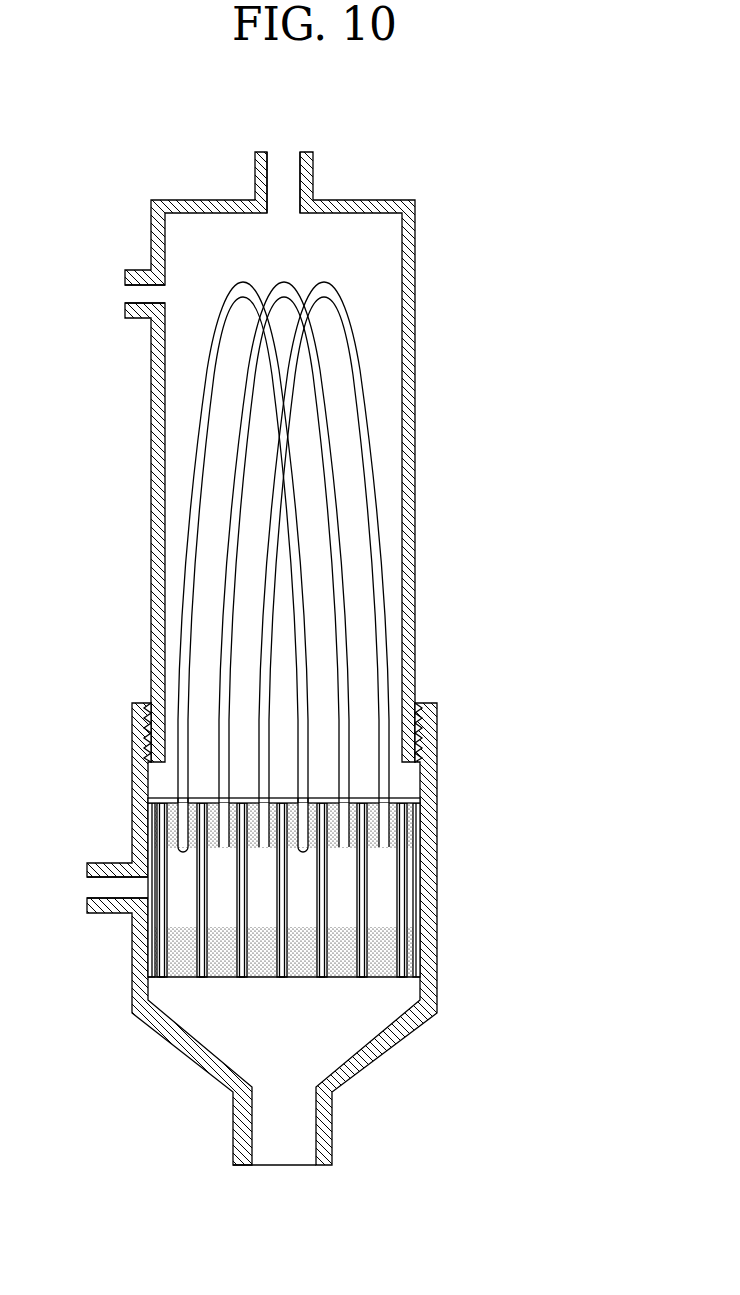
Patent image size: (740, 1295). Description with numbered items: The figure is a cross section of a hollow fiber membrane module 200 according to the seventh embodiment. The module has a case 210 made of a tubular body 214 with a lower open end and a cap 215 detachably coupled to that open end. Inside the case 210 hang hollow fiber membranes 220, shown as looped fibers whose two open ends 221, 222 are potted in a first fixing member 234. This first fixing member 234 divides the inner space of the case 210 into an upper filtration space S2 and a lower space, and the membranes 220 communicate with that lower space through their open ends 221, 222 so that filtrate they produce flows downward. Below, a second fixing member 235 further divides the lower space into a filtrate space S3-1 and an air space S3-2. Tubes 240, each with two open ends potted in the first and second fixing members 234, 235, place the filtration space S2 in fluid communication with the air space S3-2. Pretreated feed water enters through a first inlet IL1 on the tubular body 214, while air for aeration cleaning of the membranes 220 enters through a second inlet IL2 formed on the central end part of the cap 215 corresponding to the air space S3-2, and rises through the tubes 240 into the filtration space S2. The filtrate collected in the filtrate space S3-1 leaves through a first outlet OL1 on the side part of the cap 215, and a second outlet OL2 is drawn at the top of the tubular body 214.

The hollow fiber membrane module 200 is at (112, 128).
The case 210 is at (517, 587).
The tubular body 214 is at (415, 575).
The cap 215 is at (440, 733).
The hollow fiber membranes 220 is at (190, 470).
The end of hollow fiber membrane 221 is at (182, 793).
The end of hollow fiber membrane 222 is at (295, 797).
The first fixing member 234 is at (424, 818).
The second fixing member 235 is at (422, 947).
The tube 240 is at (158, 958).
The filtration space S2 is at (380, 264).
The filtrate space S3-1 is at (390, 887).
The air space S3-2 is at (372, 1013).
The first inlet IL1 is at (139, 267).
The second inlet IL2 is at (333, 1133).
The first outlet OL1 is at (110, 863).
The second outlet OL2 is at (313, 174).